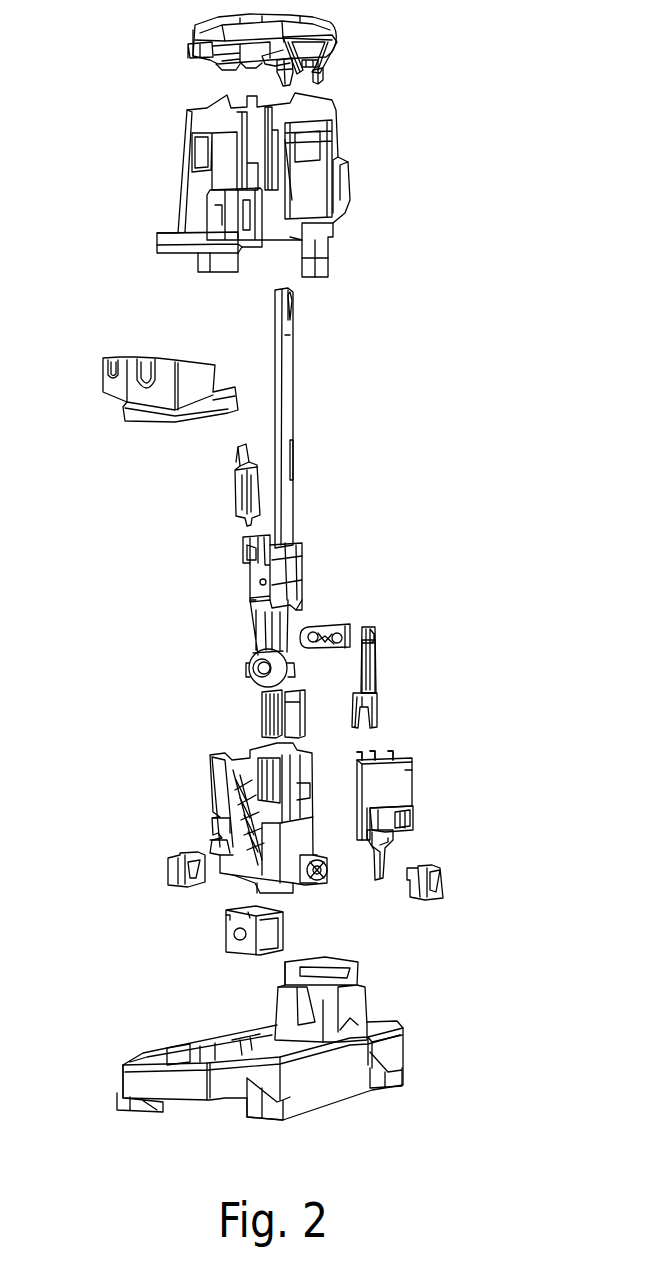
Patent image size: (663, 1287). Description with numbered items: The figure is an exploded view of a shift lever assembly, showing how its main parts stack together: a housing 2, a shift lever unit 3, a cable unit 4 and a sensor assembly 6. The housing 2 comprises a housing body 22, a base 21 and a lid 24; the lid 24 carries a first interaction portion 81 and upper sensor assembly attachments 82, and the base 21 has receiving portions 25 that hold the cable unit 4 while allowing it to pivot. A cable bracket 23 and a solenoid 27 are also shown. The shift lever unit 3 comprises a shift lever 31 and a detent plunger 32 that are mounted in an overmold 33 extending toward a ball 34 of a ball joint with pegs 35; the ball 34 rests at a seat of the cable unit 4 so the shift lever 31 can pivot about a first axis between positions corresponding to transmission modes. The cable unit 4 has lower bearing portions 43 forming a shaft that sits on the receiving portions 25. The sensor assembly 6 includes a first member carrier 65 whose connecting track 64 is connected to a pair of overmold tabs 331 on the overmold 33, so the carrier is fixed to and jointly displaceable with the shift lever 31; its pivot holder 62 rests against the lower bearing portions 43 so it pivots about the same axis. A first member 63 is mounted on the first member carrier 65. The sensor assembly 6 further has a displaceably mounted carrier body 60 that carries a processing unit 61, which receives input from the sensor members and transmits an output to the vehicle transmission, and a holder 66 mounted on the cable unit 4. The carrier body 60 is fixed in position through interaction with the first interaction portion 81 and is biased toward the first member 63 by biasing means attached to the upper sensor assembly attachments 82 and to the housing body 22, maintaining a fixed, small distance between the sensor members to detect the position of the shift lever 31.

The housing 2 is at (170, 43).
The lid 24 is at (300, 28).
The upper sensor assembly attachments 82 is at (325, 63).
The first interaction portion 81 is at (292, 72).
The housing body 22 is at (341, 190).
The cable bracket 23 is at (190, 363).
The shift lever 31 is at (296, 387).
The detent plunger 32 is at (246, 486).
The shift lever unit 3 is at (225, 624).
The overmold 33 is at (300, 576).
The overmold tabs 331 is at (258, 580).
The pegs 35 is at (250, 665).
The ball 34 is at (264, 684).
The first member carrier 65 is at (390, 663).
The connecting track 64 is at (350, 628).
The first member 63 is at (372, 636).
The pivot holder 62 is at (373, 698).
The sensor assembly 6 is at (423, 757).
The processing unit 61 is at (404, 785).
The carrier body 60 is at (423, 803).
The holder 66 is at (380, 880).
The cable unit 4 is at (213, 793).
The lower bearing portions 43 is at (304, 874).
The receiving portions 25 is at (170, 870).
The solenoid 27 is at (226, 934).
The base 21 is at (393, 1031).